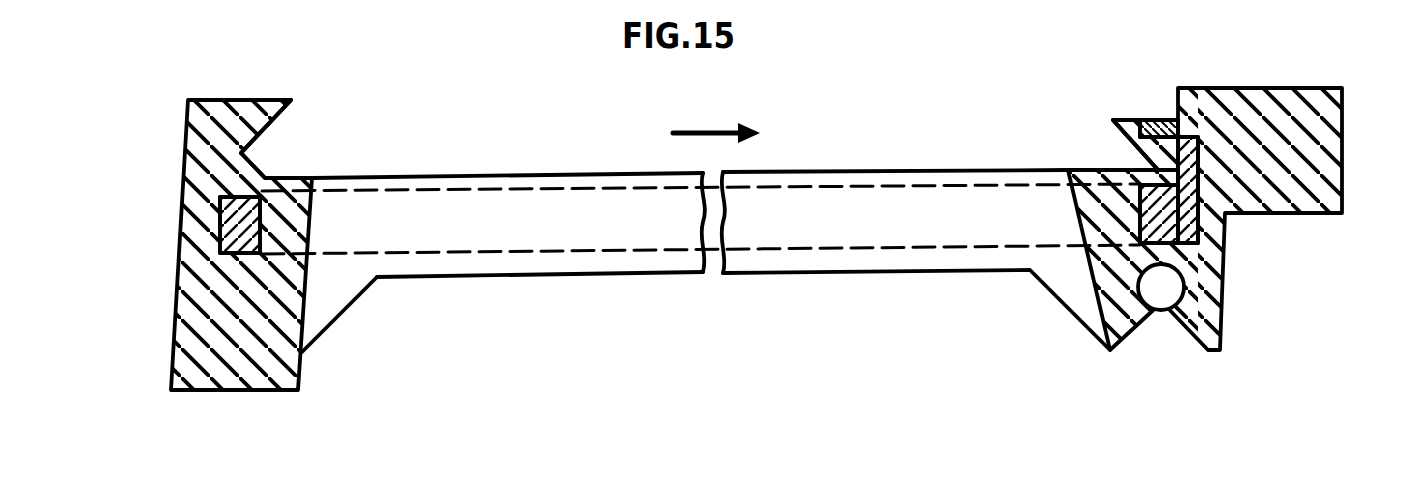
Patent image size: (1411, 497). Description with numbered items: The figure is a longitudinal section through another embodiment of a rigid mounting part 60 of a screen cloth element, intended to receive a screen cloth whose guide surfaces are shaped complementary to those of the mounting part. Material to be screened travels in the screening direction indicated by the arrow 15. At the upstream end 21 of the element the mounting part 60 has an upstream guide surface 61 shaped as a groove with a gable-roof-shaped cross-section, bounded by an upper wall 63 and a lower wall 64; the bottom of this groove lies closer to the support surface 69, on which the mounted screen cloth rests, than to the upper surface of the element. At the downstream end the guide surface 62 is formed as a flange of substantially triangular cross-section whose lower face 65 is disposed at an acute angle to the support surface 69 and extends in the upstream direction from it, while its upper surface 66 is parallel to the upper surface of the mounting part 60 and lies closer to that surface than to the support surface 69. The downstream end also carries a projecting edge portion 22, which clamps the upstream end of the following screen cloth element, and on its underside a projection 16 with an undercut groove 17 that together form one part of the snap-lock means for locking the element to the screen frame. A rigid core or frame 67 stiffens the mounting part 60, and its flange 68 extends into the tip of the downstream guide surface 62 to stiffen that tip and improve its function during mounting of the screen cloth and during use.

The arrow indicating screening direction 15 is at (716, 119).
The projection 16 is at (1094, 291).
The undercut groove 17 is at (1157, 315).
The upstream end 21 is at (241, 239).
The projecting edge portion 22 is at (1210, 220).
The mounting part 60 is at (236, 97).
The upstream guide surface 61 is at (268, 137).
The downstream guide surface 62 is at (1110, 131).
The upper wall 63 is at (283, 112).
The lower wall 64 is at (258, 172).
The lower face 65 is at (1126, 144).
The upper surface 66 is at (1142, 120).
The rigid core or frame 67 is at (219, 223).
The flange 68 is at (1191, 124).
The support surface 69 is at (300, 178).